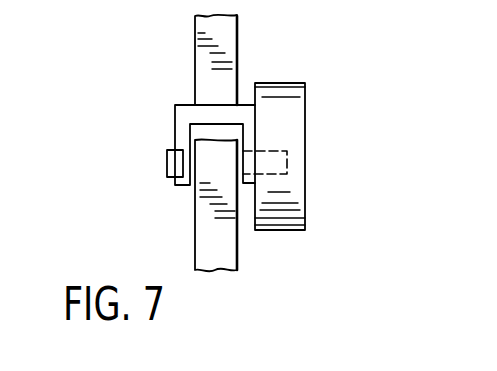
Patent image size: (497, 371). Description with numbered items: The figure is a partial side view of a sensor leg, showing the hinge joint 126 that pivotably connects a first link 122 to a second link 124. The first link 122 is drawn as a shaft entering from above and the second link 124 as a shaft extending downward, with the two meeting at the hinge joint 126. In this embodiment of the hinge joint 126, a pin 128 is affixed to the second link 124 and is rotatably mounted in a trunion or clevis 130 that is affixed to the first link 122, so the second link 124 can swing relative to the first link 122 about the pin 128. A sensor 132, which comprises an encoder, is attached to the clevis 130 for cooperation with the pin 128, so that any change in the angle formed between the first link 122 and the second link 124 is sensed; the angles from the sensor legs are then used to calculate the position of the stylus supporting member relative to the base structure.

The first link 122 is at (197, 50).
The second link 124 is at (225, 245).
The hinge joint 126 is at (314, 54).
The pin 128 is at (167, 163).
The clevis 130 is at (185, 115).
The sensor 132 is at (298, 106).